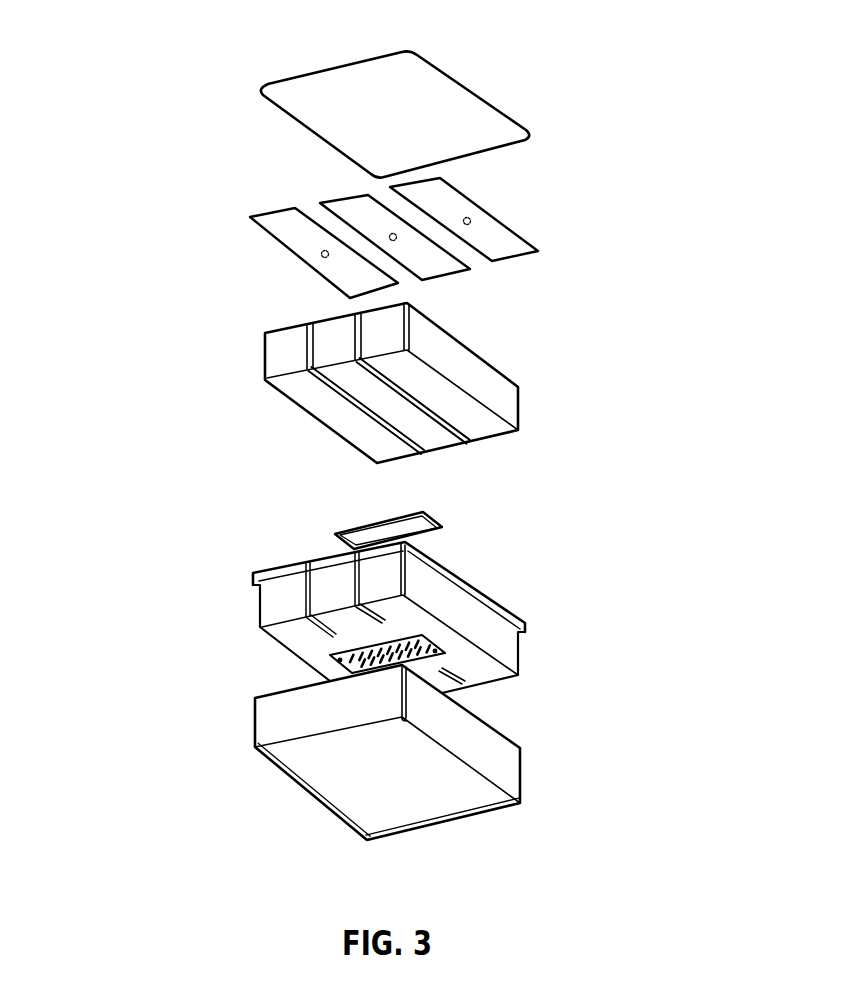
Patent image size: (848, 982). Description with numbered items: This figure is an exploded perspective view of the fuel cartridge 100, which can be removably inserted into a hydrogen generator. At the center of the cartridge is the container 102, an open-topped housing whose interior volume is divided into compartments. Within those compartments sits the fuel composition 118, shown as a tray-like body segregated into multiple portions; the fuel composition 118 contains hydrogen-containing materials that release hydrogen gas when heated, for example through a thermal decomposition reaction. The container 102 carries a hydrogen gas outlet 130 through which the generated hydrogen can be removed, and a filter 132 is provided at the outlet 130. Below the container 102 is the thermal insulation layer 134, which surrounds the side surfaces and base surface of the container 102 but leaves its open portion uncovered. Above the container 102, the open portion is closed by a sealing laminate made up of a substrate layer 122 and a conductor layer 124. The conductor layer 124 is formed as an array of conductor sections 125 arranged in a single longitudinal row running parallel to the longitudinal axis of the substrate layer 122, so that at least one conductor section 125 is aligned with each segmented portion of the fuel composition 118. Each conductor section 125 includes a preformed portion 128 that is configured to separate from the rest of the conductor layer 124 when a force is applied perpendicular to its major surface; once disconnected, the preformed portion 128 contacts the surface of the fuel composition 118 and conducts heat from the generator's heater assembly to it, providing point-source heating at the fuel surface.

The fuel cartridge 100 is at (154, 38).
The container 102 is at (503, 640).
The fuel composition 118 is at (502, 393).
The substrate layer 122 is at (451, 93).
The conductor layer 124 is at (515, 262).
The conductor sections 125 is at (358, 212).
The preformed portions 128 is at (471, 216).
The hydrogen gas outlet 130 is at (332, 658).
The filter 132 is at (433, 520).
The thermal insulation layer 134 is at (503, 763).